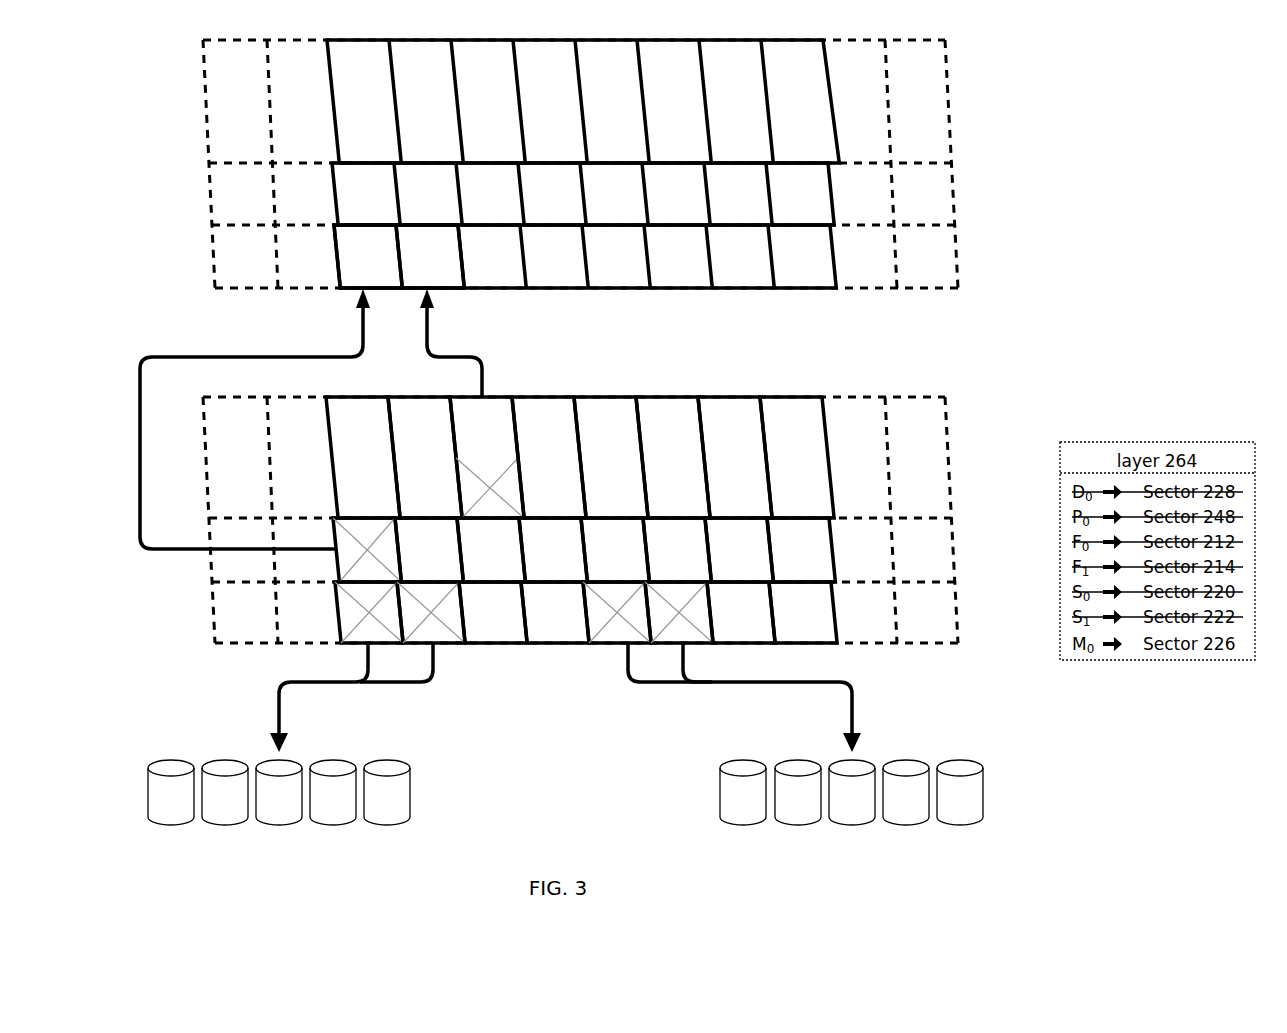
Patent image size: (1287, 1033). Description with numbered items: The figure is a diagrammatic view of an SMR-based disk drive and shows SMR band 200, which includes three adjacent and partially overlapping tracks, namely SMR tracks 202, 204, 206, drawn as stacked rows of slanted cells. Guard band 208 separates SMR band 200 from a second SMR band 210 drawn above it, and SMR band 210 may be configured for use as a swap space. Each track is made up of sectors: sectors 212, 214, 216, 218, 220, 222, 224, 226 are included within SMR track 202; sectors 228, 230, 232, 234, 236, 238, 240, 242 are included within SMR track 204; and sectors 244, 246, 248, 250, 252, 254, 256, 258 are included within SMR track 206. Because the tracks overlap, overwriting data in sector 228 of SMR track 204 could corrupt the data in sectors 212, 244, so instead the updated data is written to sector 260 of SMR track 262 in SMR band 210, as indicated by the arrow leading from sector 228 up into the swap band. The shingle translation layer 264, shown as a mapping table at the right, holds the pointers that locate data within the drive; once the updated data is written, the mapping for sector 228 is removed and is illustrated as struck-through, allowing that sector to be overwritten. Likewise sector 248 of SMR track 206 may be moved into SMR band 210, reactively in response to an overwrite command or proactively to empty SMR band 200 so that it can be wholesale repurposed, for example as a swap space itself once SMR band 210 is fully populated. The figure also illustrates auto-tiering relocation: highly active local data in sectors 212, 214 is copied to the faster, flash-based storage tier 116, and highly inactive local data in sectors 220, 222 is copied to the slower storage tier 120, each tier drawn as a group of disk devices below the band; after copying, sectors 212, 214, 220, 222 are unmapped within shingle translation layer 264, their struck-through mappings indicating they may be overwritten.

The SMR band 200 is at (1010, 441).
The SMR track 202 is at (960, 629).
The SMR track 204 is at (962, 566).
The SMR track 206 is at (962, 504).
The guard band 208 is at (945, 349).
The SMR band 210 is at (1008, 117).
The sector 212 is at (369, 612).
The sector 214 is at (431, 612).
The sector 216 is at (493, 612).
The sector 218 is at (555, 612).
The sector 220 is at (617, 612).
The sector 222 is at (679, 612).
The sector 224 is at (741, 612).
The sector 226 is at (803, 612).
The sector 228 is at (367, 550).
The sector 230 is at (429, 550).
The sector 232 is at (491, 550).
The sector 234 is at (553, 550).
The sector 236 is at (615, 550).
The sector 238 is at (677, 550).
The sector 240 is at (739, 550).
The sector 242 is at (801, 550).
The sector 244 is at (363, 457).
The sector 246 is at (425, 457).
The sector 248 is at (487, 457).
The sector 250 is at (549, 457).
The sector 252 is at (611, 457).
The sector 254 is at (673, 457).
The sector 256 is at (735, 457).
The sector 258 is at (797, 457).
The sector 260 is at (368, 256).
The SMR track 262 is at (963, 271).
The shingle translation layer 264 is at (430, 256).
The storage tier 116 is at (418, 813).
The storage tier 120 is at (712, 813).